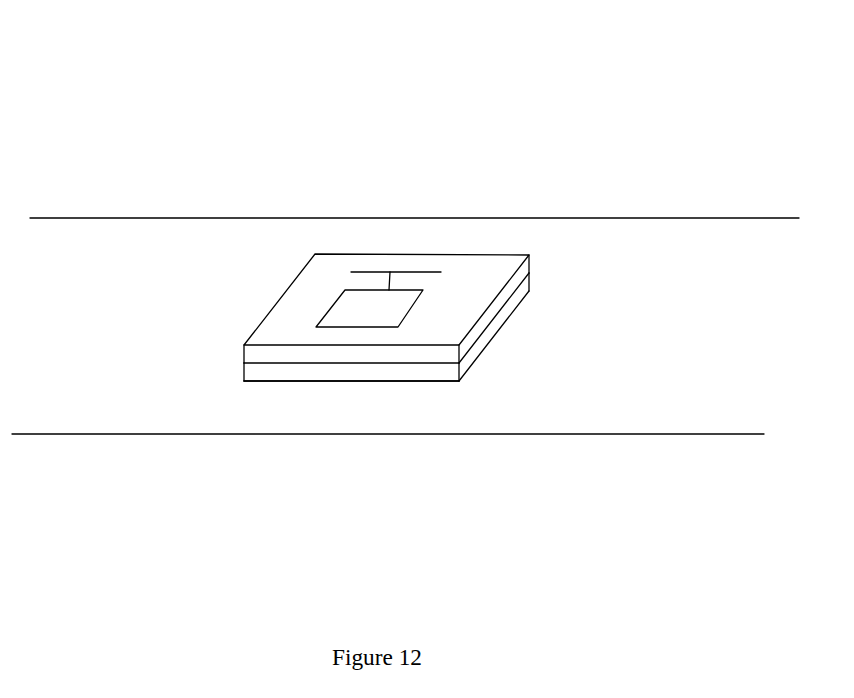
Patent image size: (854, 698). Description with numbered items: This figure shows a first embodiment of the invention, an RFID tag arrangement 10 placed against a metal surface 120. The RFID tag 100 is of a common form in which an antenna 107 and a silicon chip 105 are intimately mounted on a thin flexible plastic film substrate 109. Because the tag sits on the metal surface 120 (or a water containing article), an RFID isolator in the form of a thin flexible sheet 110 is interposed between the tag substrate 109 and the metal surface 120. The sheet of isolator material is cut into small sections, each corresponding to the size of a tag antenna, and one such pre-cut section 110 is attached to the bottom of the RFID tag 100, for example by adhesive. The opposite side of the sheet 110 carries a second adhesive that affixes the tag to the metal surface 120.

The RFID tag assembly 10 is at (400, 285).
The RFID tag 100 is at (271, 328).
The silicon chip 105 is at (353, 327).
The antenna 107 is at (390, 272).
The thin flexible plastic film substrate 109 is at (530, 273).
The thin flexible sheet 110 is at (244, 381).
The metal surface 120 is at (655, 399).